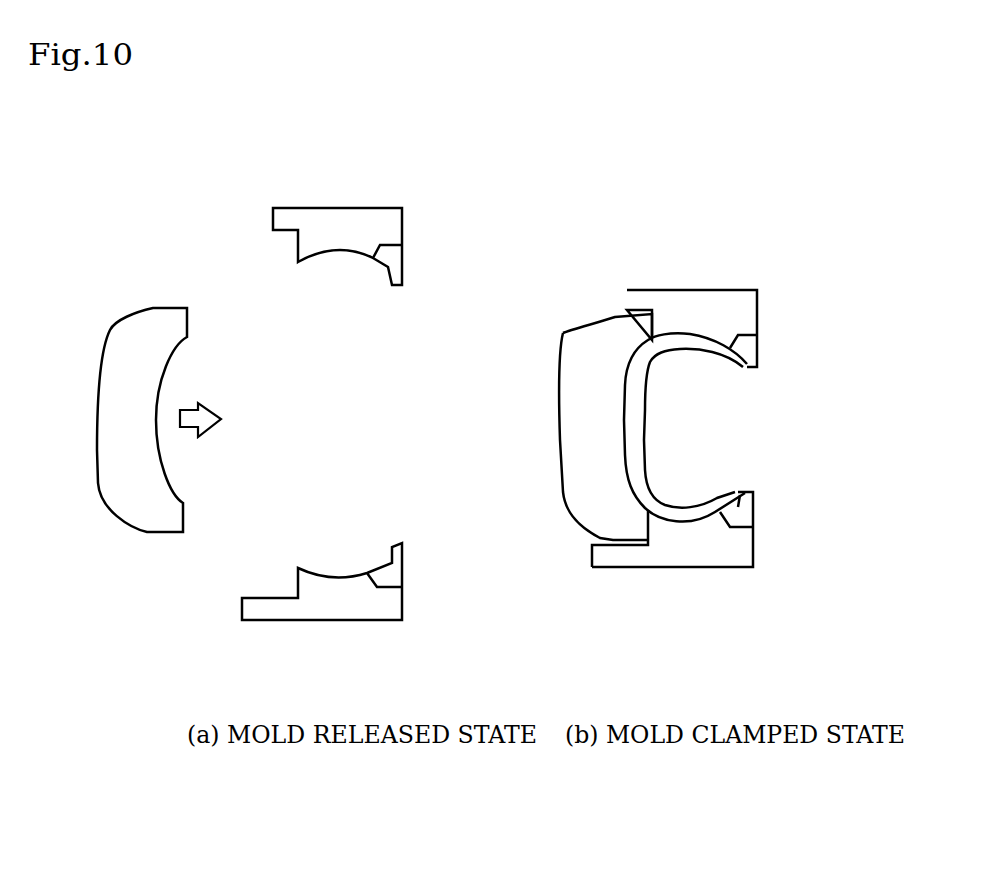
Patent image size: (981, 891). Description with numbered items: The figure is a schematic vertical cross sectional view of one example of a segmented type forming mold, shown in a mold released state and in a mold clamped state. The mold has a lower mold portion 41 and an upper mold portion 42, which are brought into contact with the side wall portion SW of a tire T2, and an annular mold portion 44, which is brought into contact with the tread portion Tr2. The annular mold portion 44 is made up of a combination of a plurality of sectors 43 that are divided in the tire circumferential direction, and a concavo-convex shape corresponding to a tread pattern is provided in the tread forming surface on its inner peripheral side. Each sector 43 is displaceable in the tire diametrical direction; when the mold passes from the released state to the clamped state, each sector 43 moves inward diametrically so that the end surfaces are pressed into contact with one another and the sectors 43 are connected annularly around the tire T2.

The lower mold portion 41 is at (325, 612).
The upper mold portion 42 is at (337, 222).
The sector 43 is at (135, 512).
The annular mold portion 44 is at (347, 436).
The side wall portion SW is at (680, 333).
The tire T2 is at (685, 376).
The tread portion Tr2 is at (618, 376).